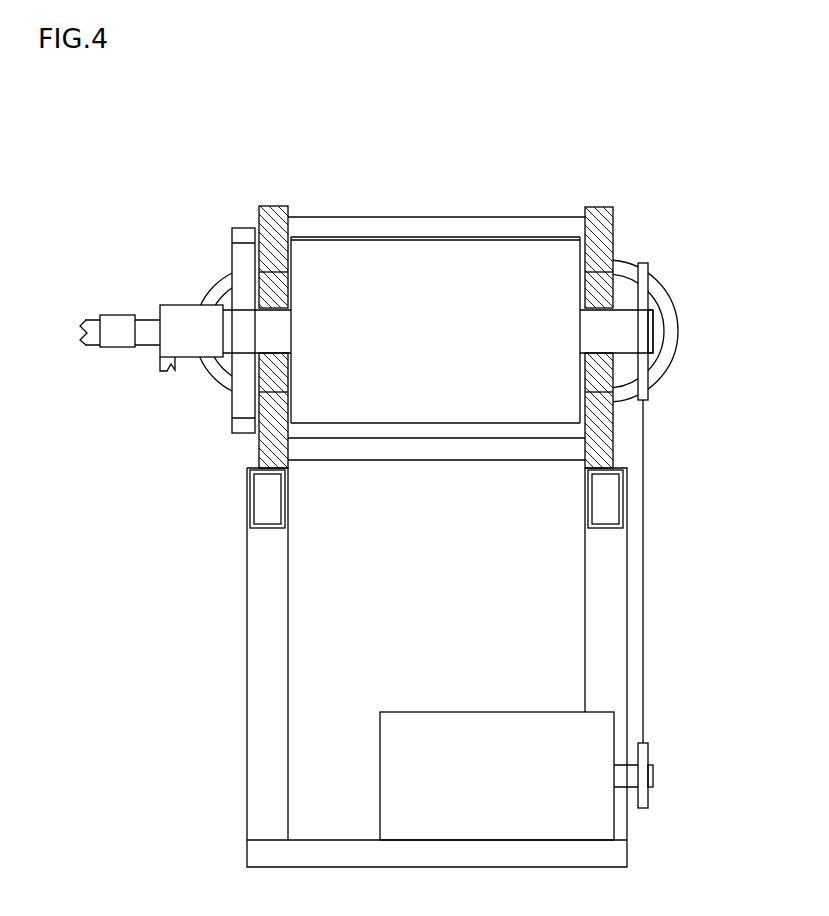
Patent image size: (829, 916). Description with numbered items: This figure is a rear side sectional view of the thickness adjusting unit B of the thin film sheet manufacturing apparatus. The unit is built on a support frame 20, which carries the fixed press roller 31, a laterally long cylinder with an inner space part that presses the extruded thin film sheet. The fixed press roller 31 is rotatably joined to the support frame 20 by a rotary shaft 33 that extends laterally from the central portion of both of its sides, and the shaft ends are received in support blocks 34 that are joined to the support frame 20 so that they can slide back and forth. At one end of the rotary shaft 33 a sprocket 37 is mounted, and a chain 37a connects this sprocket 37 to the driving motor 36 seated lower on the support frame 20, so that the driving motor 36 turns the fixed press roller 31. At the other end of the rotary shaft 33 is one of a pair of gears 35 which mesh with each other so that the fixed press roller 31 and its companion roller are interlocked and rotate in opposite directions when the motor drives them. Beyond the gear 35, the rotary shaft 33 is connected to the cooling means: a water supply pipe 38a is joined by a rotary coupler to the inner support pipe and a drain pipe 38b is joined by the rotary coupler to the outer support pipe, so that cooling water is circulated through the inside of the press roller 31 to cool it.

The support frame 20 is at (247, 597).
The fixed press roller 31 is at (482, 423).
The rotary shaft 33 is at (225, 282).
The support block 34 is at (259, 428).
The gear 35 is at (245, 228).
The driving motor 36 is at (452, 712).
The sprocket 37 is at (650, 303).
The chain 37a is at (647, 453).
The water supply pipe 38a is at (168, 371).
The drain pipe 38b is at (95, 315).
The thickness adjusting unit B is at (196, 531).